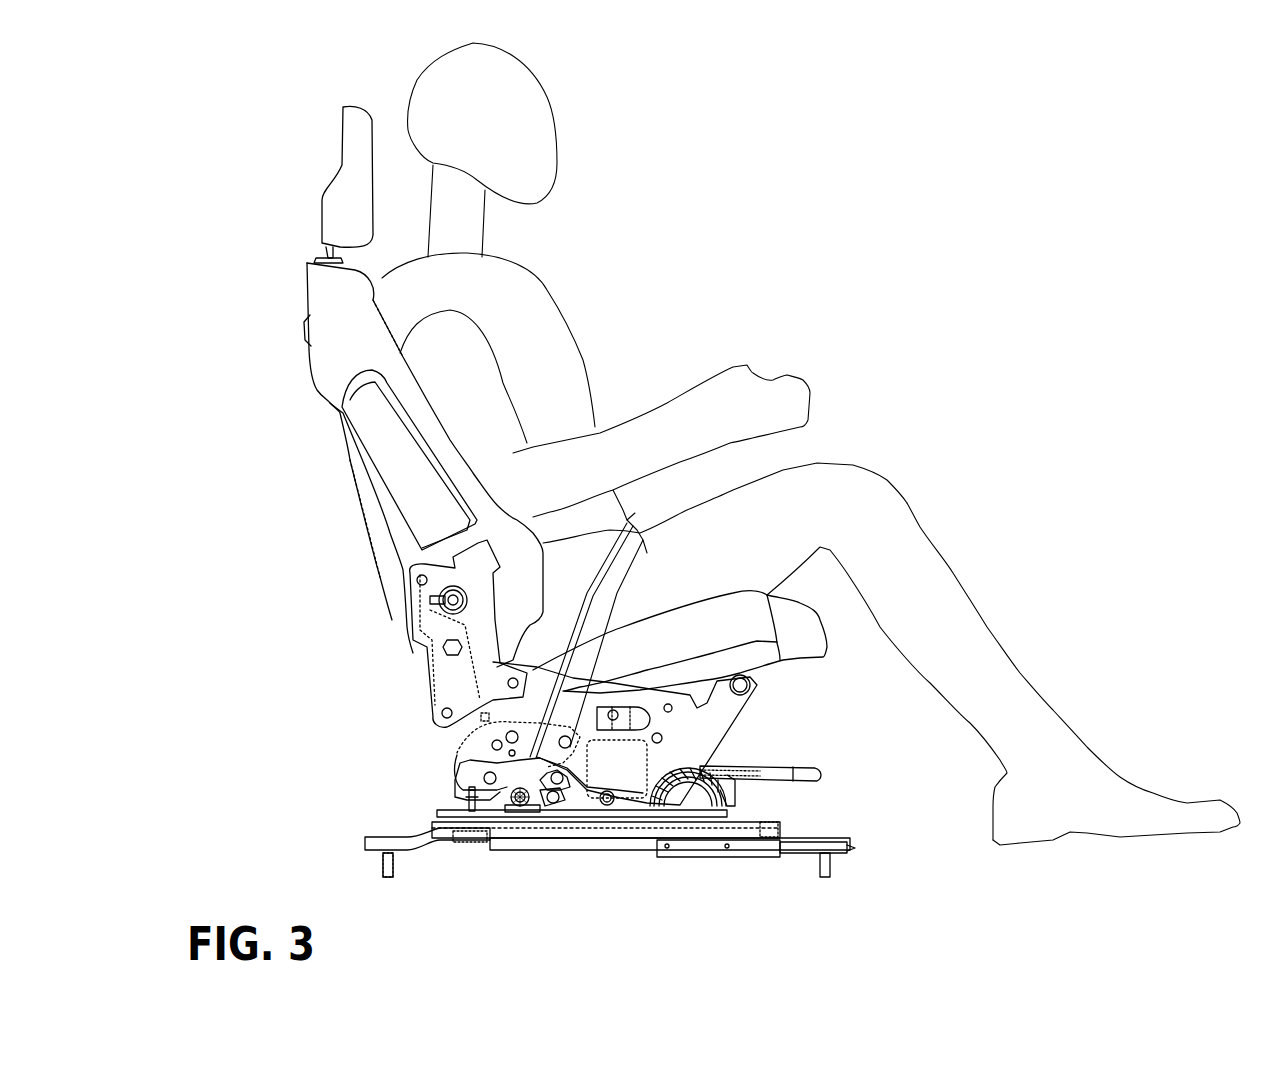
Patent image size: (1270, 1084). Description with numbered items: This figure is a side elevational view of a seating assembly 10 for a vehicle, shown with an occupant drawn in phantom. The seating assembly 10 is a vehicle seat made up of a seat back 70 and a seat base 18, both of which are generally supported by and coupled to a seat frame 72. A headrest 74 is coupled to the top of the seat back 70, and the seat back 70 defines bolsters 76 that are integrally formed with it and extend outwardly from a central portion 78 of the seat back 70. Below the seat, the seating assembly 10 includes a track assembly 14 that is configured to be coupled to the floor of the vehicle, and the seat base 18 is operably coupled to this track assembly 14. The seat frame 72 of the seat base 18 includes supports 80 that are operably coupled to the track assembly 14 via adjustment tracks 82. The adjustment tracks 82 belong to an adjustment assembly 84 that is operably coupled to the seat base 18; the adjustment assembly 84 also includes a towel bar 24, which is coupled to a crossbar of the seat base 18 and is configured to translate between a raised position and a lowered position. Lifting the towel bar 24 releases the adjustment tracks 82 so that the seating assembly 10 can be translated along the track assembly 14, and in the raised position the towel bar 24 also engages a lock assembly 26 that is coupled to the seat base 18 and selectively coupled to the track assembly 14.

The seating assembly 10 is at (240, 138).
The track assembly 14 is at (633, 838).
The seat base 18 is at (792, 660).
The towel bar 24 is at (823, 780).
The lock assembly 26 is at (523, 813).
The seat back 70 is at (307, 283).
The seat frame 72 is at (417, 660).
The headrest 74 is at (343, 137).
The bolsters 76 is at (450, 427).
The central portion 78 is at (353, 478).
The supports 80 is at (467, 763).
The adjustment tracks 82 is at (500, 818).
The adjustment assembly 84 is at (557, 812).